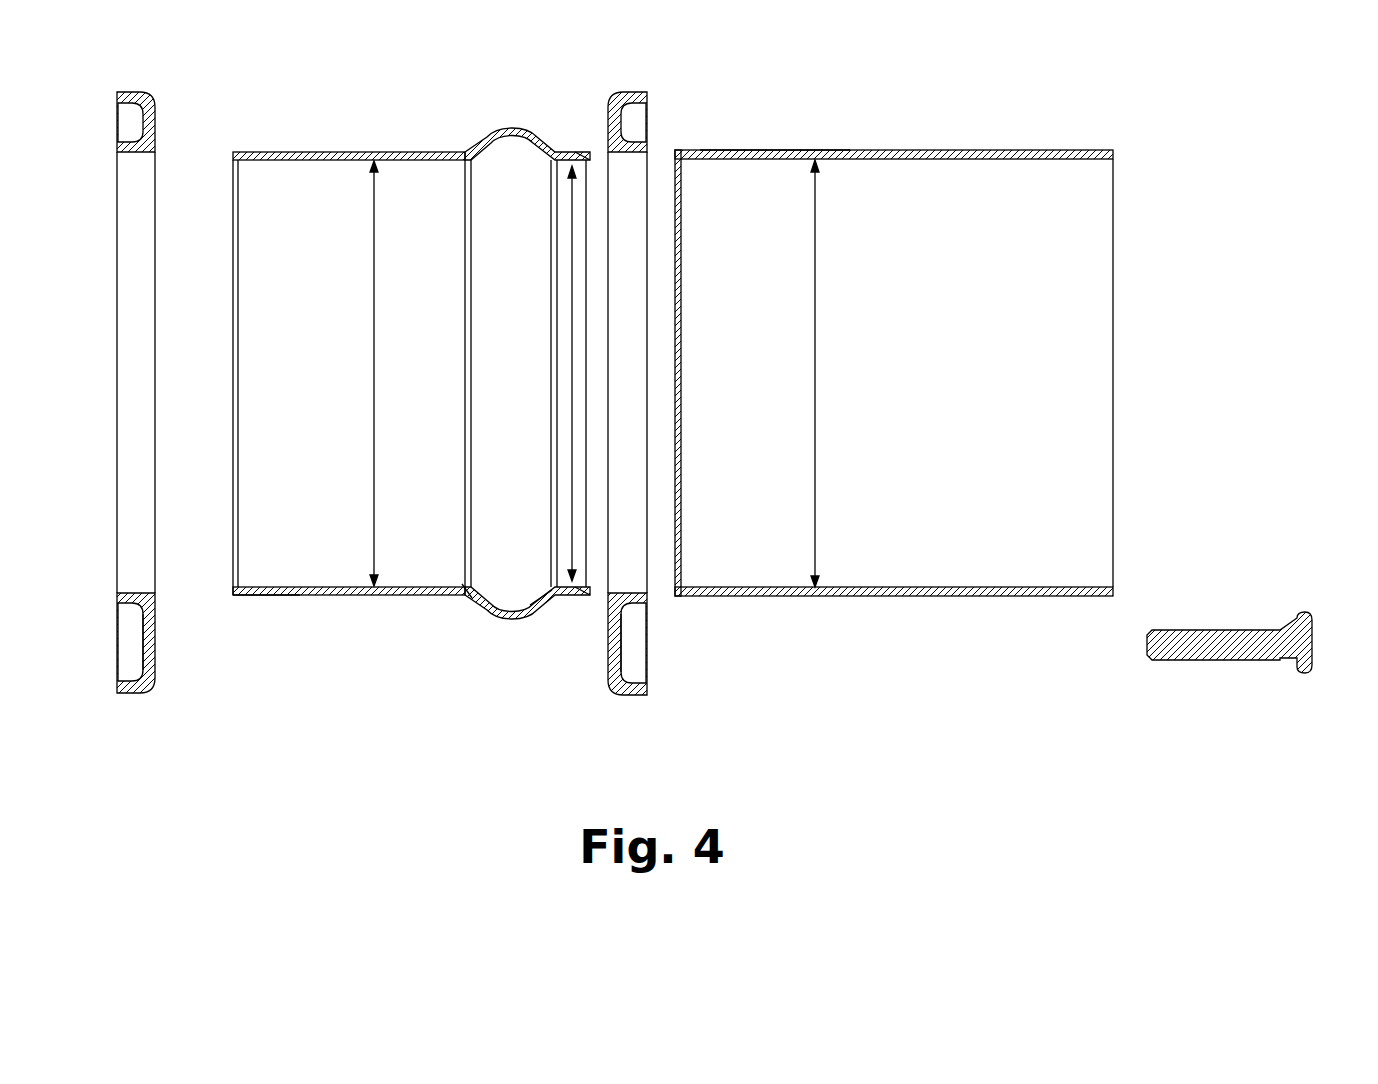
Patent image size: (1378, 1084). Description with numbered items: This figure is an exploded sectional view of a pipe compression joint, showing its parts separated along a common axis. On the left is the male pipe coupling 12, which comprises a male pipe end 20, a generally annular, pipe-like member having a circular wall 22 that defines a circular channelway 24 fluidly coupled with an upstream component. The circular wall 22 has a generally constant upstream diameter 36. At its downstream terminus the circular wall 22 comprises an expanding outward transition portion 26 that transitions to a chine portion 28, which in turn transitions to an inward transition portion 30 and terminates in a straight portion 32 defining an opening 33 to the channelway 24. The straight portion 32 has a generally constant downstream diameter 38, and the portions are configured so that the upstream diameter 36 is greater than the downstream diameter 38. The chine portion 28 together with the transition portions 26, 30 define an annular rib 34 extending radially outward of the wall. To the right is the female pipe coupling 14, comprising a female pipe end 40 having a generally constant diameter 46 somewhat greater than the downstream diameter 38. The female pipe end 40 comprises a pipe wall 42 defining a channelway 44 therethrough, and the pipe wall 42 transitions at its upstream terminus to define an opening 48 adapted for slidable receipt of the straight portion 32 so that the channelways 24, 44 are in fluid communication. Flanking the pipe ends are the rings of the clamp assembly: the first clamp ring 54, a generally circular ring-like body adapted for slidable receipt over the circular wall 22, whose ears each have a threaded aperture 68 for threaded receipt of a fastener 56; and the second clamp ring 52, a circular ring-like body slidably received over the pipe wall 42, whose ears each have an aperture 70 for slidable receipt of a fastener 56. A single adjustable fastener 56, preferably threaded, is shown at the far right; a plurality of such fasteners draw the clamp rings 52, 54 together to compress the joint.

The male pipe coupling 12 is at (318, 150).
The female pipe coupling 14 is at (900, 150).
The male pipe end 20 is at (328, 597).
The circular wall 22 is at (272, 596).
The circular channelway 24 is at (286, 402).
The outward transition portion 26 is at (462, 590).
The chine portion 28 is at (502, 621).
The inward transition portion 30 is at (552, 598).
The straight portion 32 is at (590, 598).
The opening 33 is at (588, 160).
The annular rib 34 is at (514, 130).
The upstream diameter 36 is at (372, 373).
The downstream diameter 38 is at (571, 373).
The female pipe end 40 is at (998, 599).
The pipe wall 42 is at (765, 150).
The channelway 44 is at (1019, 392).
The diameter 46 is at (815, 373).
The opening 48 is at (675, 580).
The second clamp ring 52 is at (636, 697).
The first clamp ring 54 is at (138, 695).
The fastener 56 is at (1264, 662).
The threaded aperture 68 is at (155, 650).
The aperture 70 is at (615, 648).